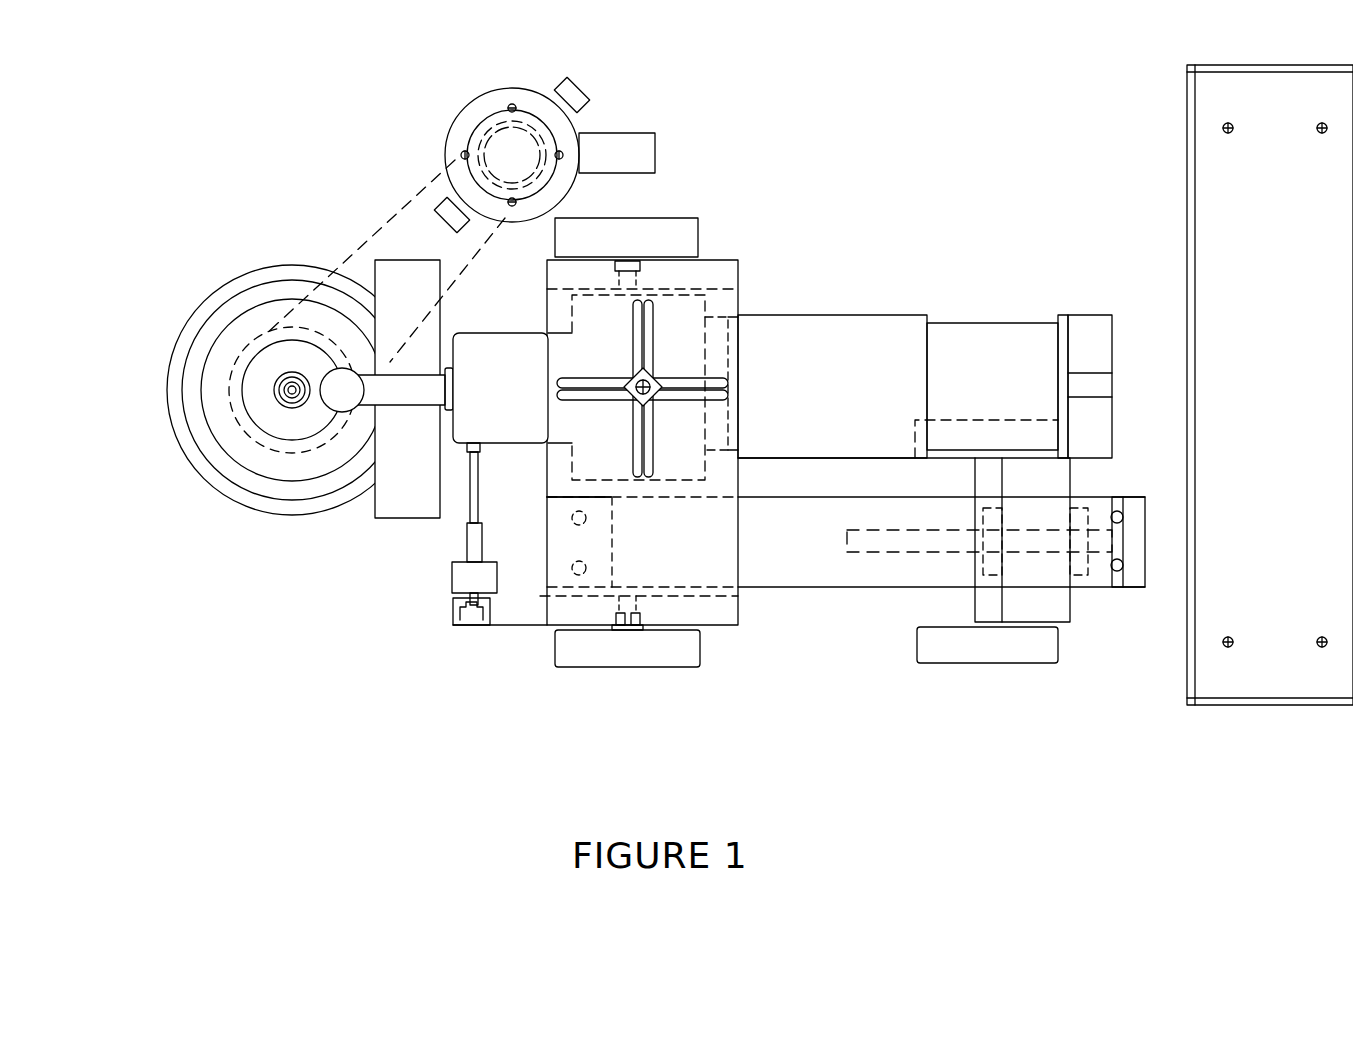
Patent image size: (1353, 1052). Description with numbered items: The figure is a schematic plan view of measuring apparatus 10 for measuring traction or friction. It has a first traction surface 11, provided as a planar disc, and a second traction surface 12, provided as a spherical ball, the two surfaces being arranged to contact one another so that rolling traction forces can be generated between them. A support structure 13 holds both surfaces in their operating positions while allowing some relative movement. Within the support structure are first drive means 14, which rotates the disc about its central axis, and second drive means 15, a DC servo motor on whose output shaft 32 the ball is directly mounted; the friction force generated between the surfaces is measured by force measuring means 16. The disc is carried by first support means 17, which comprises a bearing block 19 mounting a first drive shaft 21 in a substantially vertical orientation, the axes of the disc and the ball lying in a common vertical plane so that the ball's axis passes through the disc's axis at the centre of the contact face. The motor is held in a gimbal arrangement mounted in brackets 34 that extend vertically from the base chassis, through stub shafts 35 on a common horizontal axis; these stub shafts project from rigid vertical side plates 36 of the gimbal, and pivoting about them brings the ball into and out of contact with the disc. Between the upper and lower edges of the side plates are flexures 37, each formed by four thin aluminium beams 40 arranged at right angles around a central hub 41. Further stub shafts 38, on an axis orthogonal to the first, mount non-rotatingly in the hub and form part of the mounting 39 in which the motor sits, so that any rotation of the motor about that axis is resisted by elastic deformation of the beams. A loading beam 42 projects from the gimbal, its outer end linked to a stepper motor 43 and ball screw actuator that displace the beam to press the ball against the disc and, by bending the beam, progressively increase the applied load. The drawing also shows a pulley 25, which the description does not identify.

The measuring apparatus 10 is at (280, 600).
The first traction surface 11 is at (240, 405).
The second traction surface 12 is at (308, 372).
The support structure 13 is at (795, 638).
The first drive means 14 is at (306, 183).
The second drive means 15 is at (863, 333).
The force measuring means 16 is at (455, 585).
The first support means 17 is at (195, 490).
The bearing block 19 is at (183, 428).
The first drive shaft 21 is at (272, 387).
The drive pulley 25 is at (473, 93).
The output shaft 32 is at (383, 393).
The brackets 34 is at (607, 217).
The stub shafts 35 is at (628, 260).
The side plates 36 is at (718, 275).
The flexures 37 is at (647, 427).
The stub shafts 38 is at (662, 372).
The mounting 39 is at (512, 355).
The beams 40 is at (660, 386).
The central hub 41 is at (655, 382).
The loading beam 42 is at (815, 565).
The stepper motor 43 is at (1067, 625).